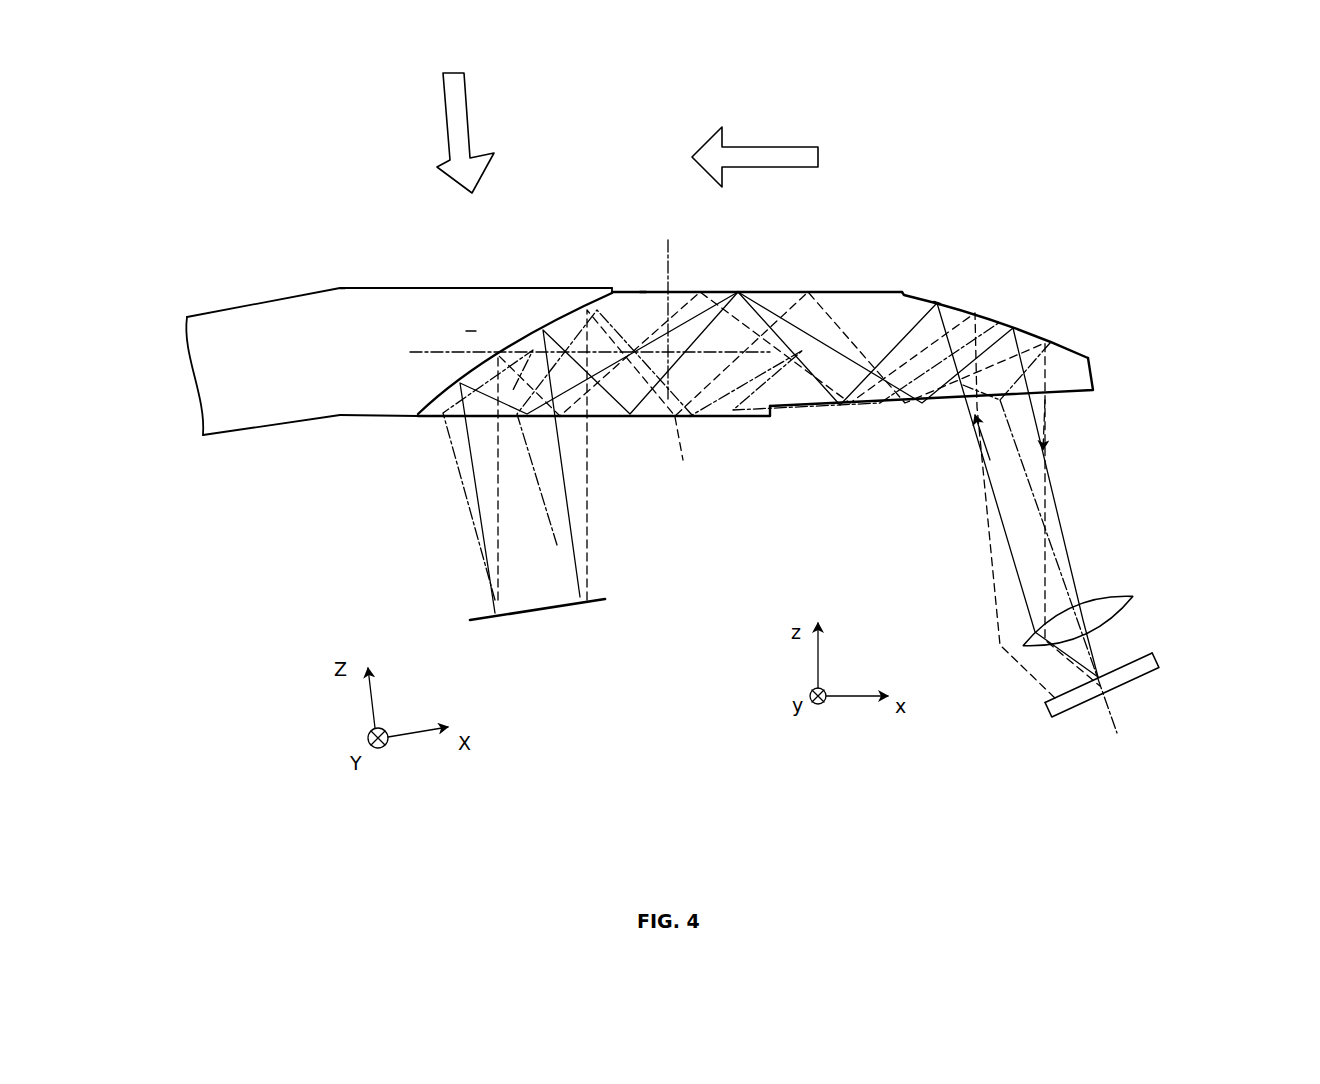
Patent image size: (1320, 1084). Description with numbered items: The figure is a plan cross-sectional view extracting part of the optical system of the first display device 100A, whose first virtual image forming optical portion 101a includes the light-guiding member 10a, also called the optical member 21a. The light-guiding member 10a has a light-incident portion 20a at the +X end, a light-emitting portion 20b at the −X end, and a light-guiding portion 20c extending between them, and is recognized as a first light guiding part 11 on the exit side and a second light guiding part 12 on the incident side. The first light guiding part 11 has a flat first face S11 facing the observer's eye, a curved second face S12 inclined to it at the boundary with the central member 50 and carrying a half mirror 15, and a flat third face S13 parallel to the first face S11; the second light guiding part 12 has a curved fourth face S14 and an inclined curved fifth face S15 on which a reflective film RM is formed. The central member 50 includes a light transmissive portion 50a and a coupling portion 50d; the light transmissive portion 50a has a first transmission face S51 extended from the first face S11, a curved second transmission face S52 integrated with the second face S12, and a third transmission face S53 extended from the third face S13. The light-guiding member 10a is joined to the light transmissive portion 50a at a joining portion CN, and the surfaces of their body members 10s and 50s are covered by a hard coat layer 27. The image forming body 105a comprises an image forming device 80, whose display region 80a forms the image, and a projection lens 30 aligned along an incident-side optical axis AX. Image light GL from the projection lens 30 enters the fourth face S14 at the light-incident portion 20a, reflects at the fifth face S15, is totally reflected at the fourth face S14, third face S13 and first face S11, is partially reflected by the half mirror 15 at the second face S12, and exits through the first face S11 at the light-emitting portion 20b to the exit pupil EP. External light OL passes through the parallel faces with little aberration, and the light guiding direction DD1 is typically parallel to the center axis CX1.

The first display device 100A is at (1078, 92).
The first virtual image forming optical portion 101a is at (862, 265).
The image forming body 105a is at (1140, 573).
The light-guiding member 10a is at (778, 455).
The optical member 21a is at (769, 375).
The body member 10s is at (653, 418).
The first light guiding part 11 is at (643, 289).
The second light guiding part 12 is at (937, 301).
The half mirror 15 is at (532, 288).
The light-incident portion 20a is at (1012, 406).
The light-emitting portion 20b is at (490, 416).
The light-guiding portion 20c is at (807, 289).
The hard coat layer 27 is at (497, 288).
The projection lens 30 is at (1133, 594).
The central member 50 is at (305, 243).
The light transmissive portion 50a is at (383, 300).
The coupling portion 50d is at (240, 322).
The body member 50s is at (338, 373).
The image forming device 80 is at (1124, 691).
The display region 80a is at (1117, 655).
The first face S11 is at (618, 418).
The second face S12 is at (515, 322).
The third face S13 is at (757, 289).
The fourth face S14 is at (913, 407).
The fifth face S15 is at (1013, 307).
The reflective film RM is at (1035, 325).
The first transmission face S51 is at (413, 417).
The second transmission face S52 is at (577, 288).
The third transmission face S53 is at (417, 287).
The joining portion CN is at (461, 281).
The center axis CX1 is at (590, 305).
The incident-side optical axis AX is at (1113, 713).
The image light GL is at (557, 527).
The exit pupil EP is at (542, 610).
The external light OL is at (461, 115).
The light guiding direction DD1 is at (777, 155).